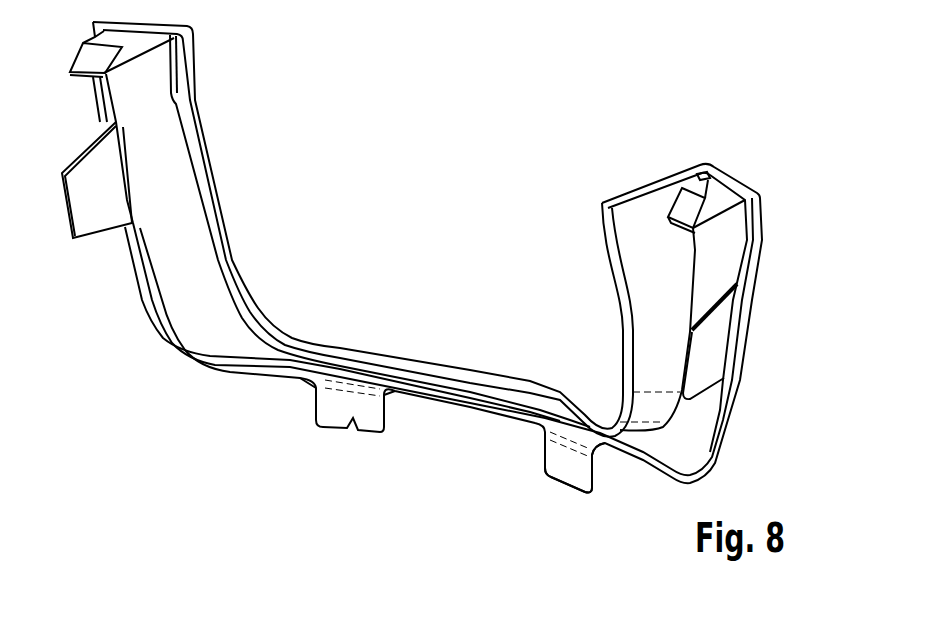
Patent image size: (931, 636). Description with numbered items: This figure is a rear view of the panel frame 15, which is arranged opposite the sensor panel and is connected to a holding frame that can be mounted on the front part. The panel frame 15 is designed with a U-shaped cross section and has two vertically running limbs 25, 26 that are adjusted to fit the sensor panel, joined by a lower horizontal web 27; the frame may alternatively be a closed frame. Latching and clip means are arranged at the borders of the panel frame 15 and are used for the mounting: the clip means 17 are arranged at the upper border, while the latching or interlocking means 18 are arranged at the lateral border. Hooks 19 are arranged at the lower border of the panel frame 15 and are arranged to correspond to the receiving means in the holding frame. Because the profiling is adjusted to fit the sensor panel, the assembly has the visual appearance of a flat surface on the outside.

The panel frame 15 is at (184, 364).
The clip means 17 is at (683, 205).
The latching means 18 is at (716, 356).
The hooks 19 is at (568, 468).
The vertically running limb 25 is at (708, 414).
The vertically running limb 26 is at (160, 281).
The lower horizontal web 27 is at (486, 408).